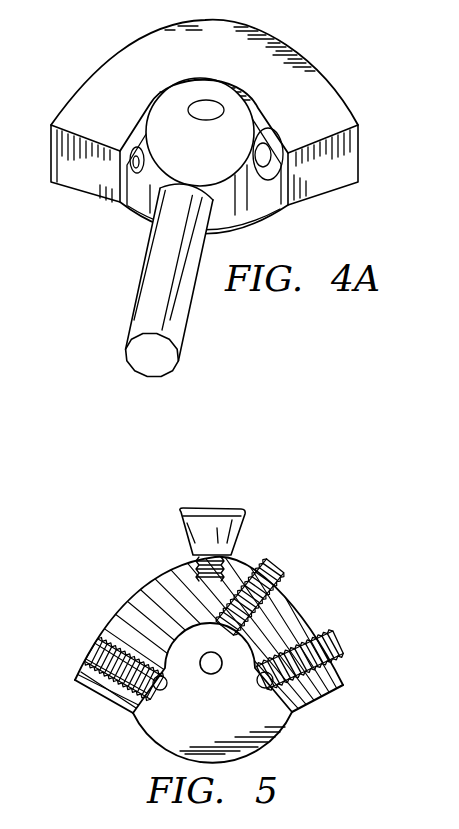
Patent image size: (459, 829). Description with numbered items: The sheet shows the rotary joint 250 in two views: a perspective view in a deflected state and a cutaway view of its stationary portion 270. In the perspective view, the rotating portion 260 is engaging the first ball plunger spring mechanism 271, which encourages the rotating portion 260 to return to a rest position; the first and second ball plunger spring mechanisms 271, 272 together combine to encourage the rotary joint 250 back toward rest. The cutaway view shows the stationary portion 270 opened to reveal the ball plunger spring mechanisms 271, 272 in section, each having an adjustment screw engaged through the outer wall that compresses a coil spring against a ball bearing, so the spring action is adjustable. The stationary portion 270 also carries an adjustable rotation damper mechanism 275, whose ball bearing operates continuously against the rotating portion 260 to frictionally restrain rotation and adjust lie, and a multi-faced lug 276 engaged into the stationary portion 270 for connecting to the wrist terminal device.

In FIG. 4A, the rotary joint 250 is at (202, 120).
In FIG. 5, the rotary joint 250 is at (232, 644).
In FIG. 4A, the rotating portion 260 is at (157, 291).
In FIG. 4A, the stationary portion 270 is at (321, 96).
In FIG. 5, the stationary portion 270 is at (298, 598).
In FIG. 4A, the first ball plunger spring mechanism 271 is at (133, 178).
In FIG. 5, the first ball plunger spring mechanism 271 is at (88, 648).
In FIG. 4A, the second ball plunger spring mechanism 272 is at (272, 141).
In FIG. 5, the second ball plunger spring mechanism 272 is at (333, 652).
In FIG. 5, the adjustable rotation damper mechanism 275 is at (277, 567).
In FIG. 5, the multi-faced lug 276 is at (180, 535).